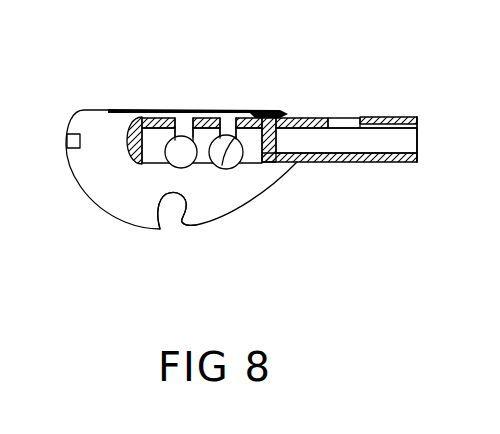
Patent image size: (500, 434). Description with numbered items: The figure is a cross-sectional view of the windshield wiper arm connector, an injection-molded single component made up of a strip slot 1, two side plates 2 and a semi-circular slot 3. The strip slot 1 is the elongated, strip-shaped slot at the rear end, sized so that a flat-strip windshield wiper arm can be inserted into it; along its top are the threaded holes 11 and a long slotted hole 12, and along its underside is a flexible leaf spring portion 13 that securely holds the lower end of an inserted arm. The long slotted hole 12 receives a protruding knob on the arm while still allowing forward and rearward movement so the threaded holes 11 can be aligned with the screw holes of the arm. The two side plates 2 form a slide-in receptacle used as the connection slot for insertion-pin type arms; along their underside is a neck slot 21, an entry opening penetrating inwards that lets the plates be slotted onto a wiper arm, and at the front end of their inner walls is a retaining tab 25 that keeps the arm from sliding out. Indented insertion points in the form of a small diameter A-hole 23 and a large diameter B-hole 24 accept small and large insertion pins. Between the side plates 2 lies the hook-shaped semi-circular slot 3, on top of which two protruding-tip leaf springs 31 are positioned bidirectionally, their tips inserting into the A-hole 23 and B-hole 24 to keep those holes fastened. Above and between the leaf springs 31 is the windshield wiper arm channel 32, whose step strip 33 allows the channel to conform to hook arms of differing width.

The strip slot 1 is at (374, 140).
The side plates 2 is at (98, 172).
The semi-circular slot 3 is at (128, 133).
The threaded holes 11 is at (292, 117).
The long slotted hole 12 is at (345, 120).
The flexible leaf spring portion 13 is at (414, 160).
The neck slot 21 is at (173, 202).
The small diameter A-hole 23 is at (193, 153).
The large diameter B-hole 24 is at (222, 165).
The retaining tab 25 is at (67, 138).
The protruding-tip leaf springs 31 is at (188, 145).
The windshield wiper arm channel 32 is at (316, 117).
The step strip 33 is at (255, 112).